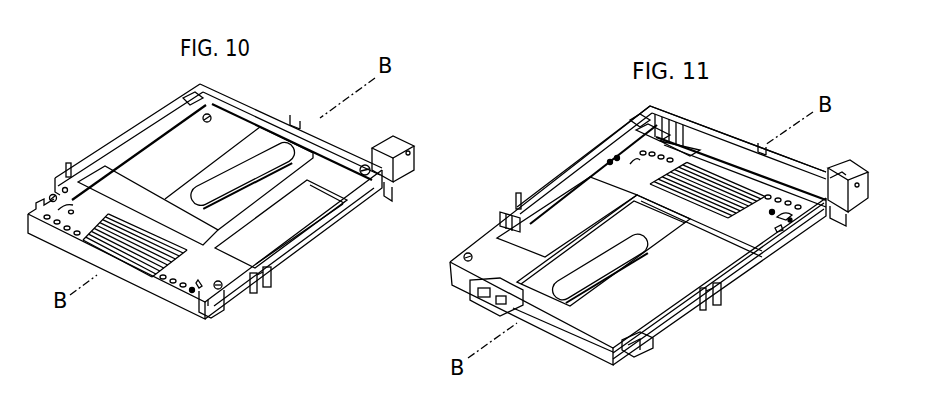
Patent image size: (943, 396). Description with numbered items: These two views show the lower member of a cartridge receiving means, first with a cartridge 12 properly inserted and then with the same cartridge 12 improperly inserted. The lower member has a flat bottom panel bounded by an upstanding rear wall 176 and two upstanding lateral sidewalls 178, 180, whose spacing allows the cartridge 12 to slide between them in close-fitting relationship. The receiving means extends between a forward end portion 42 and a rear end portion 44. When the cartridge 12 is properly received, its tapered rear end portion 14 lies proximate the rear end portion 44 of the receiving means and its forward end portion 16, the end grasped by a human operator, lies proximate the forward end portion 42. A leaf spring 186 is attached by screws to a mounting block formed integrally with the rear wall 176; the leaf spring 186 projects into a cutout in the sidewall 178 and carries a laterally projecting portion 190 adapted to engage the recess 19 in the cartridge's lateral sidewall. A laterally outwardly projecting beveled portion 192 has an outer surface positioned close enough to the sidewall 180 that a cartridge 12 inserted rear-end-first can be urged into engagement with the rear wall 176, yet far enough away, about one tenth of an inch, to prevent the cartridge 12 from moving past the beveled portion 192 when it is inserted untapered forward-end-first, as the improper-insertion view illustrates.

In FIG. 10, the cartridge 12 is at (403, 96).
In FIG. 11, the cartridge 12 is at (768, 105).
In FIG. 10, the rear end portion 14 is at (340, 170).
In FIG. 11, the rear end portion 14 is at (597, 343).
In FIG. 10, the forward end portion 16 is at (178, 306).
In FIG. 11, the forward end portion 16 is at (764, 192).
In FIG. 11, the recess 19 is at (638, 355).
In FIG. 10, the forward end portion 42 is at (262, 296).
In FIG. 11, the forward end portion 42 is at (710, 313).
In FIG. 10, the rear end portion 44 is at (382, 193).
In FIG. 11, the rear end portion 44 is at (863, 172).
In FIG. 10, the rear wall 176 is at (243, 102).
In FIG. 11, the rear wall 176 is at (707, 137).
In FIG. 11, the lateral sidewall 178 is at (760, 275).
In FIG. 10, the lateral sidewall 180 is at (140, 125).
In FIG. 11, the lateral sidewall 180 is at (580, 158).
In FIG. 10, the leaf spring 186 is at (413, 170).
In FIG. 11, the leaf spring 186 is at (850, 210).
In FIG. 11, the laterally projecting portion 190 is at (838, 182).
In FIG. 10, the beveled portion 192 is at (180, 108).
In FIG. 11, the beveled portion 192 is at (633, 132).